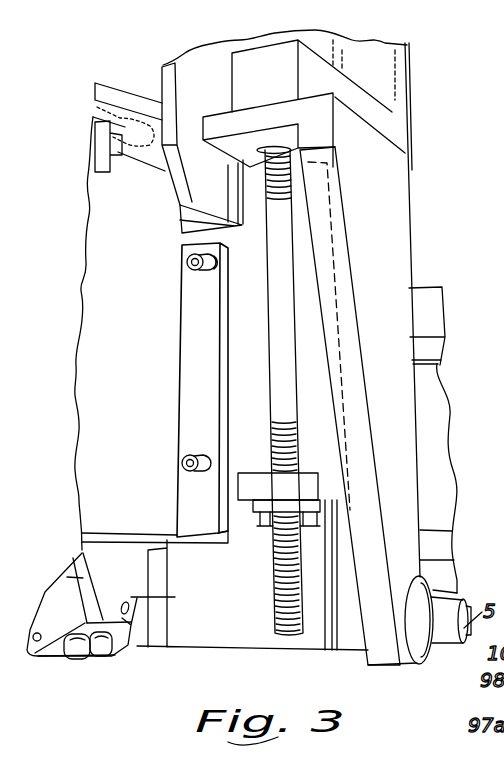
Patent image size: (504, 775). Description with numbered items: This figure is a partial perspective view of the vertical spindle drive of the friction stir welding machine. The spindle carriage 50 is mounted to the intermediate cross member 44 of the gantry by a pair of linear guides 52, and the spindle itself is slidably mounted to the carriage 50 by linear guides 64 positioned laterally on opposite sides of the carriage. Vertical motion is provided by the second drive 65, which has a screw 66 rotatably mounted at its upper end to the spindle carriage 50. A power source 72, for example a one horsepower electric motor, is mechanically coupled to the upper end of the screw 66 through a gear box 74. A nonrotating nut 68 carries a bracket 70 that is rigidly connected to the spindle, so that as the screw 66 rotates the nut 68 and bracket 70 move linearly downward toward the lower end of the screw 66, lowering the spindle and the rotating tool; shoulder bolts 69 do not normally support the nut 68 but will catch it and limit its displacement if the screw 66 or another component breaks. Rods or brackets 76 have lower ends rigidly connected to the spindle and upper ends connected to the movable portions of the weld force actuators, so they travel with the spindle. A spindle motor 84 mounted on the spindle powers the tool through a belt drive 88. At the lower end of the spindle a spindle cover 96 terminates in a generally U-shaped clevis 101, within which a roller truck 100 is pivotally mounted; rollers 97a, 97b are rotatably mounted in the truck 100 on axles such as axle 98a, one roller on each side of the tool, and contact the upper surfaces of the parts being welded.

The intermediate cross member 44 is at (440, 313).
The spindle carriage 50 is at (395, 184).
The linear guides 52 is at (438, 350).
The linear guides 64 is at (140, 640).
The second drive 65 is at (388, 116).
The screw 66 is at (275, 573).
The nut 68 is at (257, 500).
The shoulder bolts 69 is at (270, 510).
The bracket 70 is at (250, 487).
The power source 72 is at (388, 67).
The gear box 74 is at (271, 82).
The rods or brackets 76 is at (163, 72).
The spindle motor 84 is at (112, 389).
The belt drive 88 is at (130, 121).
The spindle cover 96 is at (100, 558).
The roller 97a is at (62, 655).
The roller 97b is at (97, 658).
The axle or pin 98a is at (65, 600).
The roller support or truck 100 is at (72, 557).
The clevis 101 is at (140, 598).